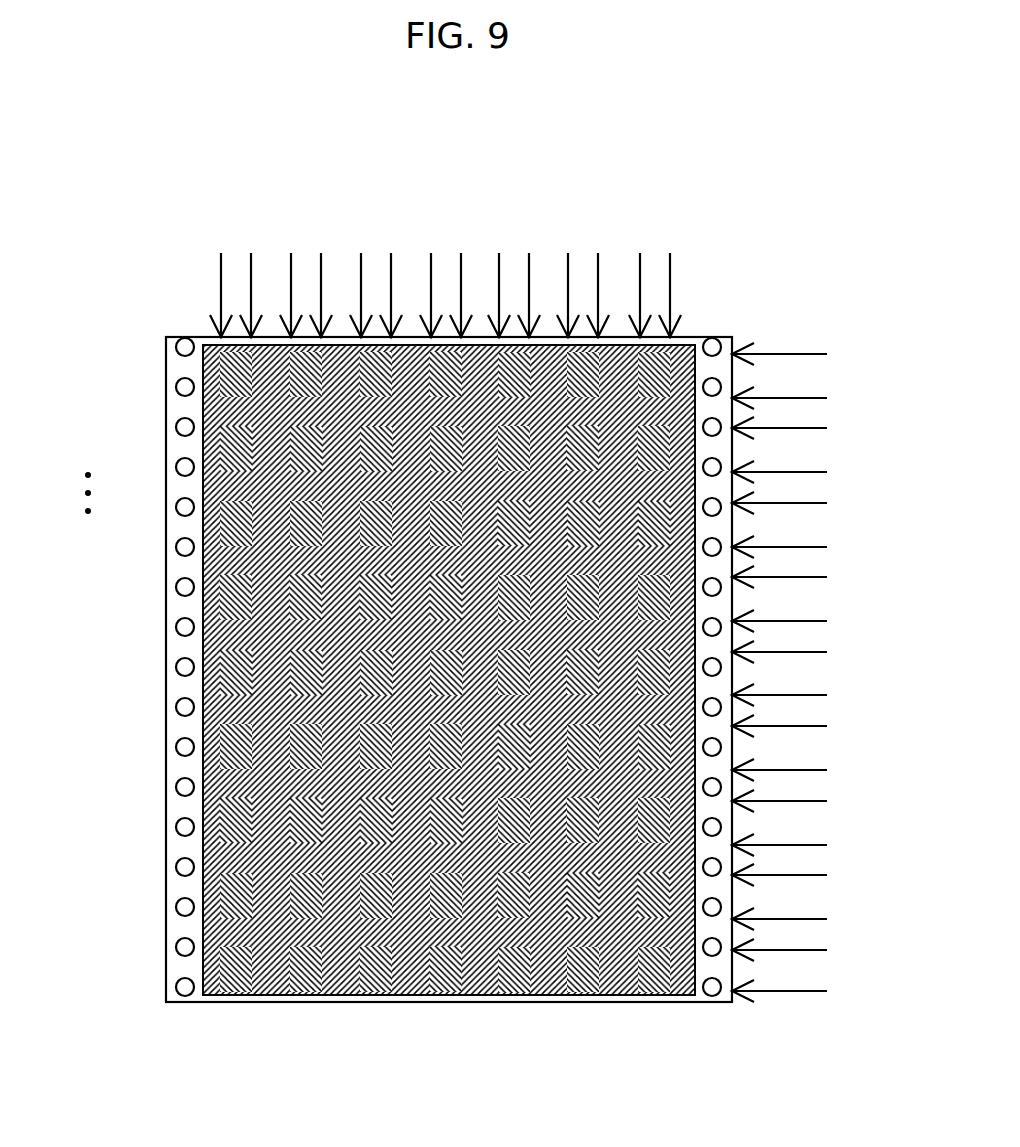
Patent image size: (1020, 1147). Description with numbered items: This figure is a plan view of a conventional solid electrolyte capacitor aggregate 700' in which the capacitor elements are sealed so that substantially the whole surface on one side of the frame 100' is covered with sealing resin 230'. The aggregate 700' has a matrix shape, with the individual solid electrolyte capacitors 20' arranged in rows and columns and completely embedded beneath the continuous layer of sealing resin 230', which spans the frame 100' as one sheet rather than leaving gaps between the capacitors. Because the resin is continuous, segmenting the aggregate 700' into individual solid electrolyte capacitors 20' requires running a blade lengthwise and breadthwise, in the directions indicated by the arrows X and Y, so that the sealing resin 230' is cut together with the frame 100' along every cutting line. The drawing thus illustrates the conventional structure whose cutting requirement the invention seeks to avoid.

The solid electrolyte capacitor aggregate 700' is at (475, 637).
The frame 100' is at (477, 631).
The solid electrolyte capacitor 20' is at (369, 669).
The sealing resin 230' is at (449, 717).